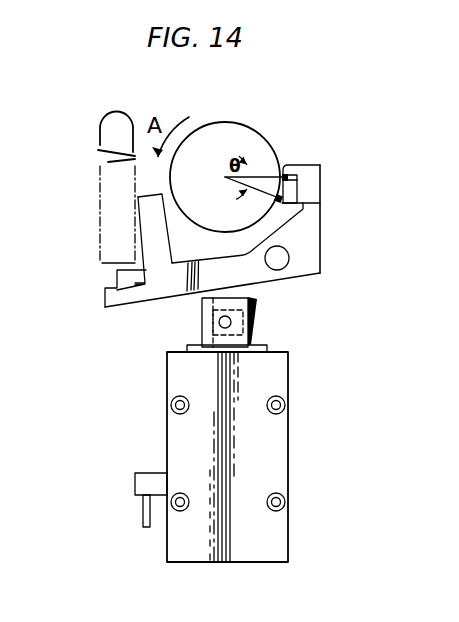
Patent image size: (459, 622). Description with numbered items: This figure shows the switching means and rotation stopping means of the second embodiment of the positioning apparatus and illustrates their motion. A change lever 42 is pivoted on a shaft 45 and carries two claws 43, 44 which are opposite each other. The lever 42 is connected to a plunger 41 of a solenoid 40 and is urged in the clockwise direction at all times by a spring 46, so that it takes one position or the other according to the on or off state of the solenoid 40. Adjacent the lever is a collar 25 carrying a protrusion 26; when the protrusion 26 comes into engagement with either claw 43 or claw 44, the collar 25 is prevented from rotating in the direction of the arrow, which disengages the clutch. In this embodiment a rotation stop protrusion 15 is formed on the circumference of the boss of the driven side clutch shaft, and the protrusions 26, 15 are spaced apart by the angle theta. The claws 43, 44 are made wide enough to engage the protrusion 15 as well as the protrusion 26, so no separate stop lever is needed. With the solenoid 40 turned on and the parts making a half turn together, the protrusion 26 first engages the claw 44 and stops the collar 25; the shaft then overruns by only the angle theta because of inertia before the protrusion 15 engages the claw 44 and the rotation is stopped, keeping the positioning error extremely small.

The protrusion 15 is at (284, 202).
The collar 25 is at (224, 122).
The protrusion 26 is at (297, 180).
The solenoid 40 is at (289, 378).
The plunger 41 is at (202, 326).
The change lever 42 is at (306, 276).
The claw 43 is at (139, 197).
The claw 44 is at (303, 165).
The shaft 45 is at (278, 270).
The spring 46 is at (98, 155).